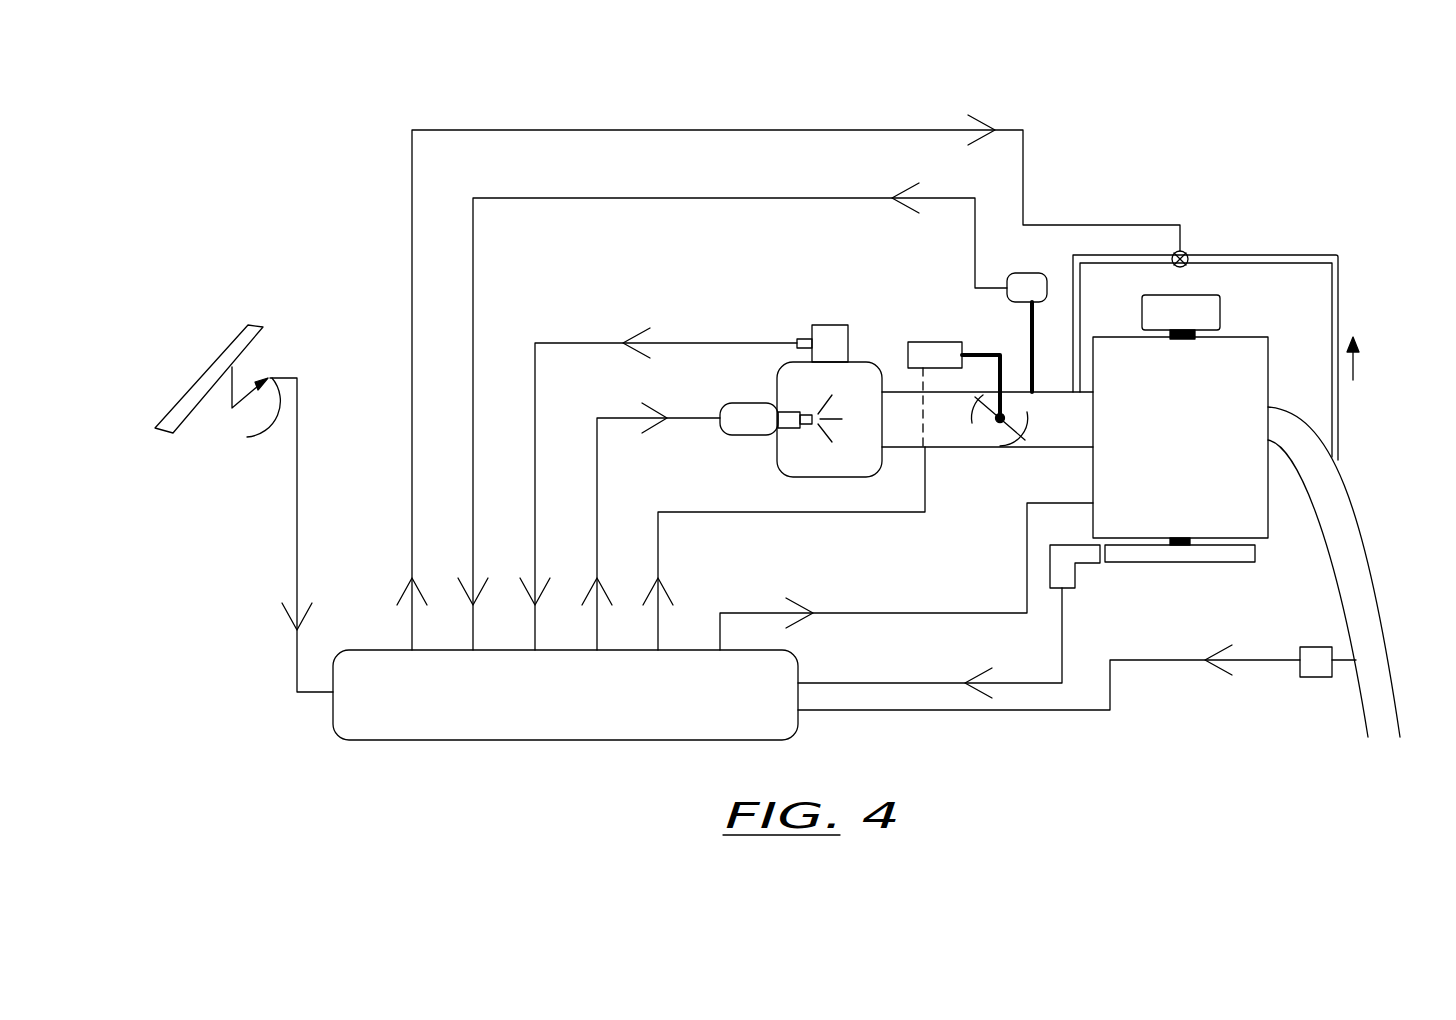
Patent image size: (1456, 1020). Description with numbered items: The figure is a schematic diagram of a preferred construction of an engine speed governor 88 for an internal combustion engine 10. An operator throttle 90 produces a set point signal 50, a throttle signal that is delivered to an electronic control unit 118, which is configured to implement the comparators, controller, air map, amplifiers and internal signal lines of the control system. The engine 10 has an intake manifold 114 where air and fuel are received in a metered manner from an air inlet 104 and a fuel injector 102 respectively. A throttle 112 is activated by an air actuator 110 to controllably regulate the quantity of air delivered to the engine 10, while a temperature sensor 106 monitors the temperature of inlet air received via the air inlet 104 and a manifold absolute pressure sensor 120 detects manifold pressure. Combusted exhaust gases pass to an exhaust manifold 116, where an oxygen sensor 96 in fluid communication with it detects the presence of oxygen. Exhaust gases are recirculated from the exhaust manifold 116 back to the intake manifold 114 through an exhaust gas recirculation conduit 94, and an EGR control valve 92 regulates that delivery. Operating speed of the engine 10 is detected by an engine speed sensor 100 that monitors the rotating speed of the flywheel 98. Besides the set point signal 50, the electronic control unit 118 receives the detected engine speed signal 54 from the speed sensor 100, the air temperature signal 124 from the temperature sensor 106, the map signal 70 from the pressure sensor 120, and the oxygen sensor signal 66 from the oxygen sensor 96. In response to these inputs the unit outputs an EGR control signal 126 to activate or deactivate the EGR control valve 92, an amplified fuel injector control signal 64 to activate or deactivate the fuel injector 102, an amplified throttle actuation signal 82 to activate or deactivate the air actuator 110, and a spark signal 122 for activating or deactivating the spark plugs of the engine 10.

The engine speed governor 88 is at (318, 118).
The electronic control unit 118 is at (570, 742).
The throttle 90 is at (215, 358).
The set point signal 50 is at (297, 523).
The EGR control signal line 126 is at (493, 129).
The map signal 70 is at (573, 197).
The air temperature signal 124 is at (582, 342).
The fuel injector control signal 64 is at (597, 447).
The throttle actuation signal 82 is at (840, 512).
The spark signal 122 is at (853, 612).
The engine speed signal 54 is at (1018, 683).
The oxygen sensor signal 66 is at (1060, 712).
The air actuator 110 is at (906, 355).
The air inlet 104 is at (797, 337).
The temperature sensor 106 is at (797, 343).
The fuel injector 102 is at (748, 403).
The intake manifold 114 is at (910, 480).
The manifold absolute pressure sensor 120 is at (1007, 280).
The throttle 112 is at (1023, 418).
The internal combustion engine 10 is at (1243, 337).
The flywheel 98 is at (1257, 552).
The engine speed sensor 100 is at (1068, 590).
The EGR control valve 92 is at (1185, 250).
The exhaust gas recirculation conduit 94 is at (1340, 316).
The exhaust manifold 116 is at (1380, 605).
The oxygen sensor 96 is at (1310, 680).